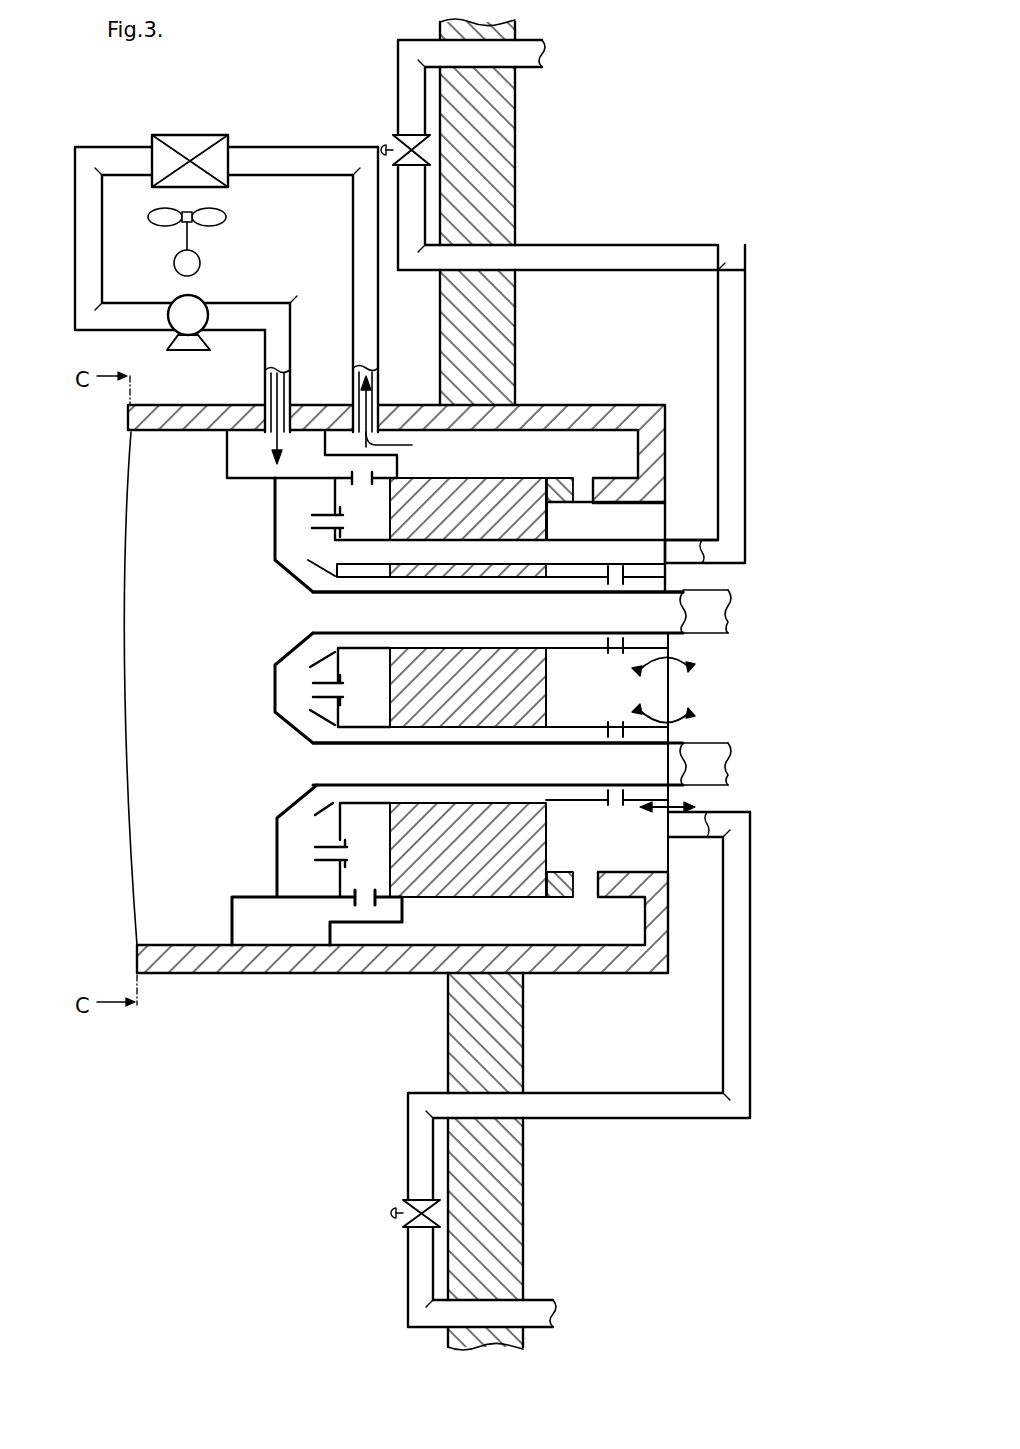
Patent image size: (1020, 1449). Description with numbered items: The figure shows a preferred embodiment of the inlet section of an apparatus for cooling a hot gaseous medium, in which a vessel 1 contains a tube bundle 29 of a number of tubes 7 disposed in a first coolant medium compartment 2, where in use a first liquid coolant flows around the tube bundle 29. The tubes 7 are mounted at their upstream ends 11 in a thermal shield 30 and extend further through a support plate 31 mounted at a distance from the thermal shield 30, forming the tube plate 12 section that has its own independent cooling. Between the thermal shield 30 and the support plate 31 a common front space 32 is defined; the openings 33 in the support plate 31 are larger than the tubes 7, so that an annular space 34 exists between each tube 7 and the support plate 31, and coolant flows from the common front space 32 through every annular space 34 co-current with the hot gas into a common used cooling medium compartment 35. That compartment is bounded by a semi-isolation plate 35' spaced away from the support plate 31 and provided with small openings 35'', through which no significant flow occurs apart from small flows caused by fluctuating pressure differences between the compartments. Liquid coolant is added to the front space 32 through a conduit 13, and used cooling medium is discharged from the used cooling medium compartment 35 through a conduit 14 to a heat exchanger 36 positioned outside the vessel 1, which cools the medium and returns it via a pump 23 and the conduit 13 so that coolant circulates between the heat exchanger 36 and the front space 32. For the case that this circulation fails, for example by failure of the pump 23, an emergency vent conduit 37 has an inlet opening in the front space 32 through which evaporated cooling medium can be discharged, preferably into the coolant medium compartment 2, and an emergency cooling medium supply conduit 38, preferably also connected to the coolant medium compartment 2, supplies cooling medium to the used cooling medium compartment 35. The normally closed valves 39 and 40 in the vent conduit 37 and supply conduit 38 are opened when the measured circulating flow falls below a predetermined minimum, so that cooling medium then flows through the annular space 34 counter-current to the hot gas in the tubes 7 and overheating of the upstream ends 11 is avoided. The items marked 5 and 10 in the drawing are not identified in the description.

The vessel 1 is at (515, 313).
The first coolant medium compartment 2 is at (695, 151).
The lower shaft 5 is at (602, 975).
The tubes 7 is at (713, 588).
The upper housing part 10 is at (520, 372).
The upstream ends 11 is at (315, 770).
The tube plate 12 is at (362, 962).
The means to add liquid coolant 13 is at (265, 380).
The means to discharge the cooling medium 14 is at (380, 377).
The pump 23 is at (175, 340).
The tube bundle 29 is at (713, 635).
The thermal shield 30 is at (273, 552).
The support plate 31 is at (547, 517).
The common front space 32 is at (275, 497).
The openings 33 is at (367, 627).
The annular space 34 is at (425, 583).
The used cooling medium compartment 35 is at (631, 532).
The semi-isolation plate 35' is at (627, 523).
The small openings 35'' is at (642, 689).
The heat exchanger 36 is at (188, 135).
The emergency vent conduit 37 is at (745, 372).
The emergency cooling medium supply conduit 38 is at (750, 955).
The valve 39 is at (403, 132).
The valve 40 is at (420, 1224).